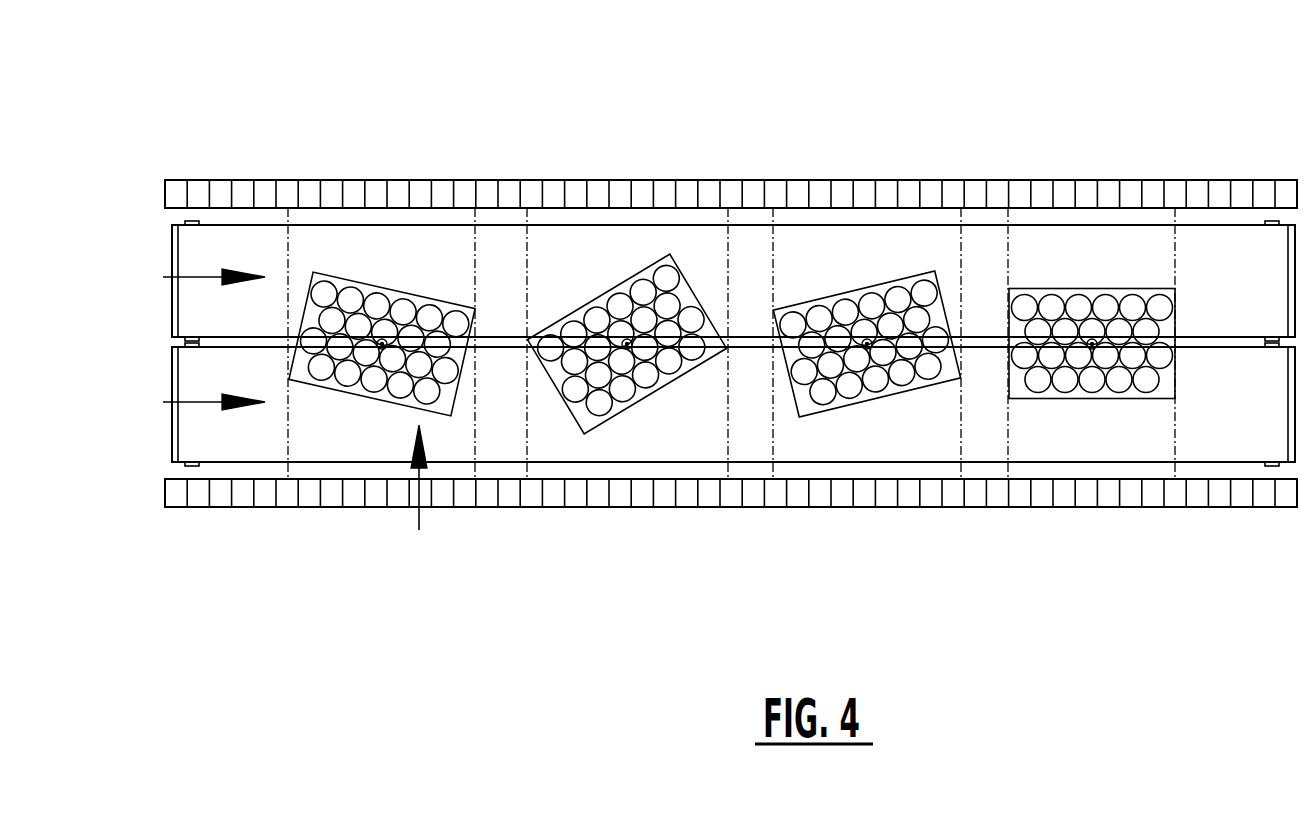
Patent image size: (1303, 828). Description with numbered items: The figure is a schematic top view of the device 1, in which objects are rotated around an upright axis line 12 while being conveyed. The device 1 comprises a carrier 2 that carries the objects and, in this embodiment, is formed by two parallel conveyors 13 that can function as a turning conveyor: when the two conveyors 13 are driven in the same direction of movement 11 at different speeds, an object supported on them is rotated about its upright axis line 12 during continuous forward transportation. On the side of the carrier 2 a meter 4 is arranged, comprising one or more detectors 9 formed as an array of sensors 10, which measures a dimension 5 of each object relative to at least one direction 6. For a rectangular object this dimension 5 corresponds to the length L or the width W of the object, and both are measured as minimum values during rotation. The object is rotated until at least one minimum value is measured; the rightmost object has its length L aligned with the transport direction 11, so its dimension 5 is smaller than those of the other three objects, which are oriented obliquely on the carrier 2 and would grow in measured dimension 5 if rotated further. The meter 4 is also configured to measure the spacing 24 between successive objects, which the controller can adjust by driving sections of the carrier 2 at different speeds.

The device 1 is at (923, 109).
The carrier 2 is at (665, 344).
The meter 4 is at (668, 351).
The dimension 5 is at (769, 408).
The direction 6 is at (412, 480).
The detector 9 is at (731, 328).
The array of sensors 10 is at (374, 191).
The direction of movement 11 is at (214, 325).
The upright axis line 12 is at (379, 351).
The parallel conveyors 13 is at (101, 249).
The spacing 24 is at (528, 533).
The length L is at (370, 283).
The width W is at (465, 385).